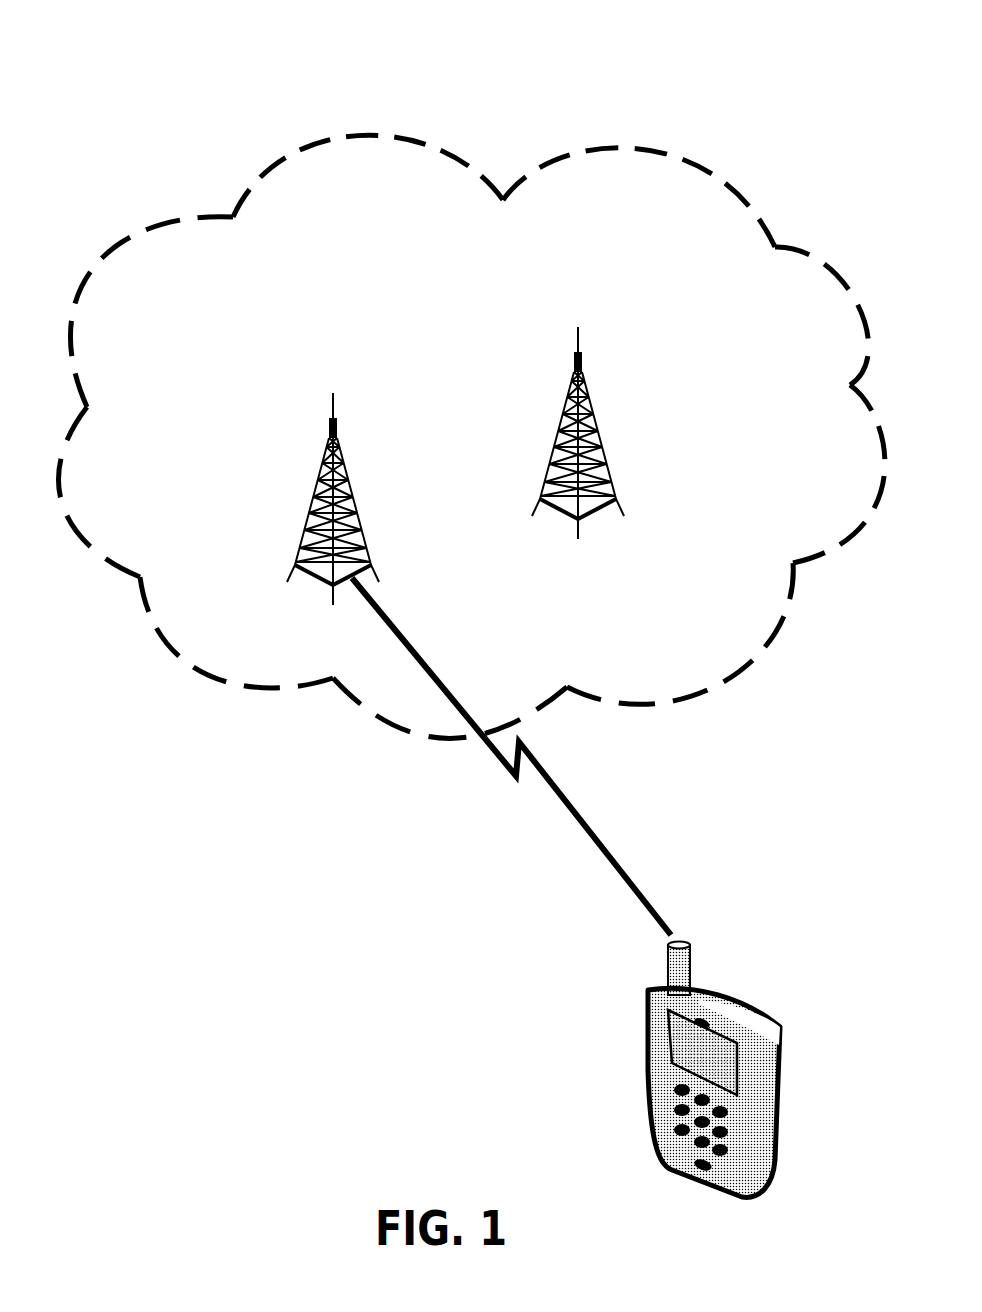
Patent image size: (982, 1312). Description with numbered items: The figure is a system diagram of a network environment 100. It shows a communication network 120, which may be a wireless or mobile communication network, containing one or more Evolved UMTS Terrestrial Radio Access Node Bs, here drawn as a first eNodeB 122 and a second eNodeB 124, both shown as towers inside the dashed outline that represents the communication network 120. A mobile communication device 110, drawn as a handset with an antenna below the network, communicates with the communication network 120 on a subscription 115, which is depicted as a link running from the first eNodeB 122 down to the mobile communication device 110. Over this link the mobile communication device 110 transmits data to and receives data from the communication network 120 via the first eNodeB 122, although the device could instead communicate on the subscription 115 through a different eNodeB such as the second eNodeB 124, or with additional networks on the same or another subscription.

The network environment 100 is at (97, 92).
The mobile communication device 110 is at (782, 1078).
The subscription 115 is at (602, 842).
The communication network 120 is at (468, 320).
The first eNodeB 122 is at (348, 485).
The second eNodeB 124 is at (593, 417).